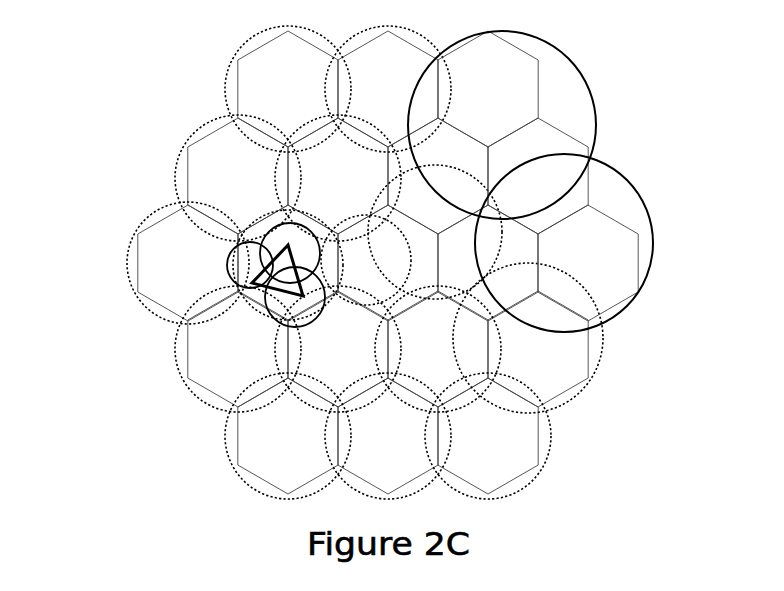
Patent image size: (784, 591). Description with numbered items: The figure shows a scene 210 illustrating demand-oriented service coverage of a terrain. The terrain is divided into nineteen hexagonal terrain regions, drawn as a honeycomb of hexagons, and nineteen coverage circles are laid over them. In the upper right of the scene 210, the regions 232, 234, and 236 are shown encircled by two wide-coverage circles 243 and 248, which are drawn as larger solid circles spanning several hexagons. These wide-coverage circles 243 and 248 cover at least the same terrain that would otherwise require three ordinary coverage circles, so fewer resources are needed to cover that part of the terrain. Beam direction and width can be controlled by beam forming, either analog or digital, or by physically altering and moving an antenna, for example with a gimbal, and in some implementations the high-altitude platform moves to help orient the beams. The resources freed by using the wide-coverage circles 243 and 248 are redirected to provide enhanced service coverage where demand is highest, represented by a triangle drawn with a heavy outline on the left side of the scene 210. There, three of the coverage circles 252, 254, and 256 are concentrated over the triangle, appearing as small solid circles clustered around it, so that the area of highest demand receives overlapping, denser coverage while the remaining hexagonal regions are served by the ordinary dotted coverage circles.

The scene 210 is at (119, 67).
The region 232 is at (527, 52).
The region 234 is at (565, 133).
The region 236 is at (613, 218).
The wide-coverage circle 243 is at (597, 108).
The wide-coverage circle 248 is at (655, 222).
The coverage circle 252 is at (273, 210).
The coverage circle 254 is at (227, 260).
The coverage circle 256 is at (268, 316).